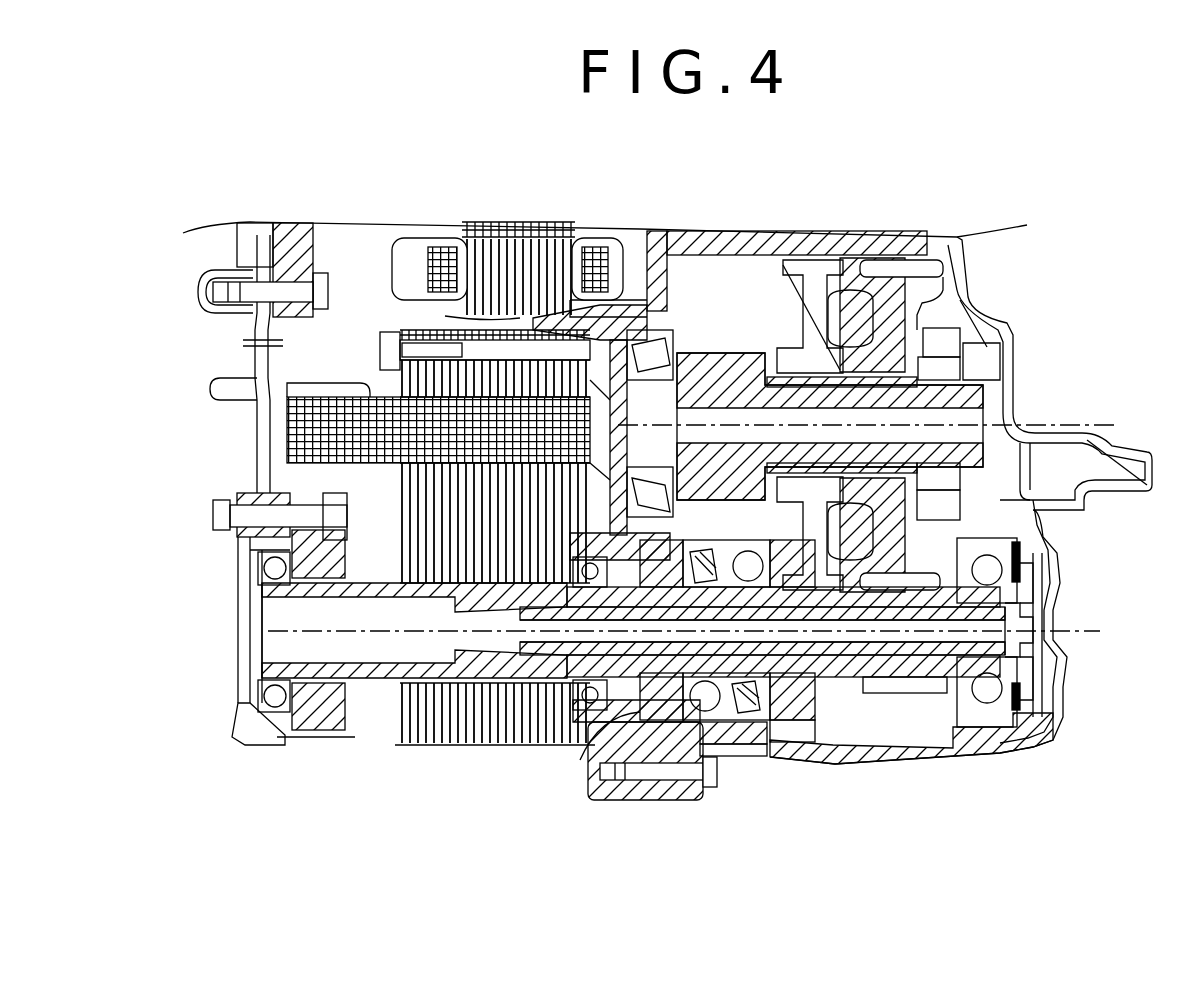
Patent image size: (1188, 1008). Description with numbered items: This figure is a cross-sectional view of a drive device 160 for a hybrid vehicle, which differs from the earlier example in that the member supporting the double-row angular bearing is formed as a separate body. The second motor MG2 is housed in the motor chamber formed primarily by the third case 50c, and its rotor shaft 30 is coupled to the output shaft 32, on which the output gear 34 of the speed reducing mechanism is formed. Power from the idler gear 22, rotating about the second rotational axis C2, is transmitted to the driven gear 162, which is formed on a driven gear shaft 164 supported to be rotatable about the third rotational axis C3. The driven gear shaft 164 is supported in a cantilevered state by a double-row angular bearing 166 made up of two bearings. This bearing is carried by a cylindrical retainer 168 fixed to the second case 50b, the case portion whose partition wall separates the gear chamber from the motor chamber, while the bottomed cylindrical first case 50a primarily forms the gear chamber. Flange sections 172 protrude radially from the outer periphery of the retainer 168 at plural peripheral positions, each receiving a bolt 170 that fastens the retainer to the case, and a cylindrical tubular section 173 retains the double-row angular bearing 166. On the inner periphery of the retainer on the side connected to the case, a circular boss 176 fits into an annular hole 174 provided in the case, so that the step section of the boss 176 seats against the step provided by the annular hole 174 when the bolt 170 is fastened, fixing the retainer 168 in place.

The drive device 160 is at (835, 182).
The idler gear 22 is at (817, 317).
The second rotational axis C2 is at (1088, 420).
The third rotational axis C3 is at (1096, 622).
The circular boss 176 is at (640, 556).
The third case 50c is at (238, 645).
The rotor shaft 30 is at (377, 674).
The driven gear 162 is at (830, 684).
The output gear 34 is at (918, 690).
The output shaft 32 is at (1033, 652).
The annular hole 174 is at (605, 713).
The second case 50b is at (603, 760).
The bolt 170 is at (652, 803).
The flange section 172 is at (681, 790).
The double-row angular bearing 166 is at (732, 746).
The retainer 168 is at (757, 762).
The tubular section 173 is at (767, 767).
The driven gear shaft 164 is at (796, 737).
The first case 50a is at (1012, 744).
The second motor MG2 is at (425, 752).